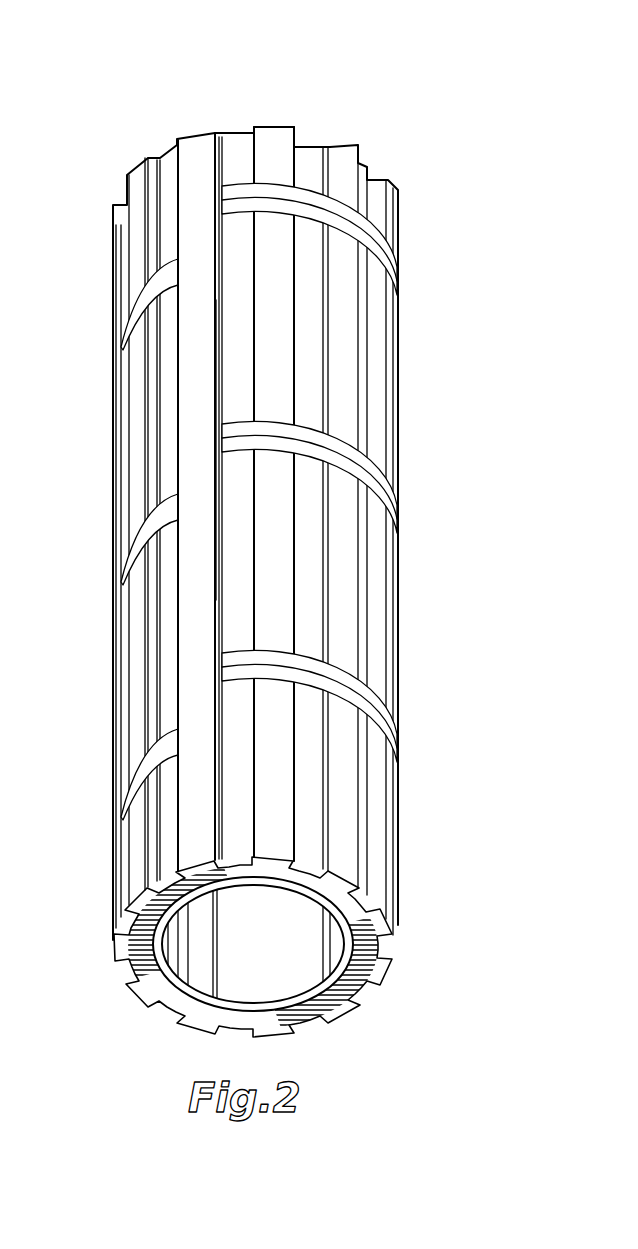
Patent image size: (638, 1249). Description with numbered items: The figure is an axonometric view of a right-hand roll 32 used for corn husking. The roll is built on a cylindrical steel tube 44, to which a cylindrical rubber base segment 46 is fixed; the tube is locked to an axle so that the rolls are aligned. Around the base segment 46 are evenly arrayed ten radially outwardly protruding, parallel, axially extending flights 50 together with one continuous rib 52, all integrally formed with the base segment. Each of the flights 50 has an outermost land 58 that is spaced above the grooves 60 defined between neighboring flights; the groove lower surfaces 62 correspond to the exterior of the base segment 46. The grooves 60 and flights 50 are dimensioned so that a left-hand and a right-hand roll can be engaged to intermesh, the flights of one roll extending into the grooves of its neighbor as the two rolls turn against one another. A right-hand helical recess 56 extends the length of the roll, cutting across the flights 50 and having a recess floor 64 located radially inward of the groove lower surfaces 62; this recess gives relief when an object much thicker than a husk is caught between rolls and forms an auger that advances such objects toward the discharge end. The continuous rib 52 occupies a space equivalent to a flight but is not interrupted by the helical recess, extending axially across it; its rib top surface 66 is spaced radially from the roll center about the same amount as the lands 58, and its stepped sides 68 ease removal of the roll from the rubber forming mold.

The right-hand roll 32 is at (452, 236).
The cylindrical steel tube 44 is at (353, 1010).
The cylindrical rubber base segment 46 is at (370, 882).
The flights 50 is at (362, 563).
The continuous rib 52 is at (180, 658).
The right-hand helical recess 56 is at (350, 425).
The lands 58 is at (272, 492).
The grooves 60 is at (237, 498).
The groove lower surfaces 62 is at (222, 598).
The recess floor 64 is at (385, 690).
The rib top surface 66 is at (201, 128).
The stepped sides 68 is at (247, 213).